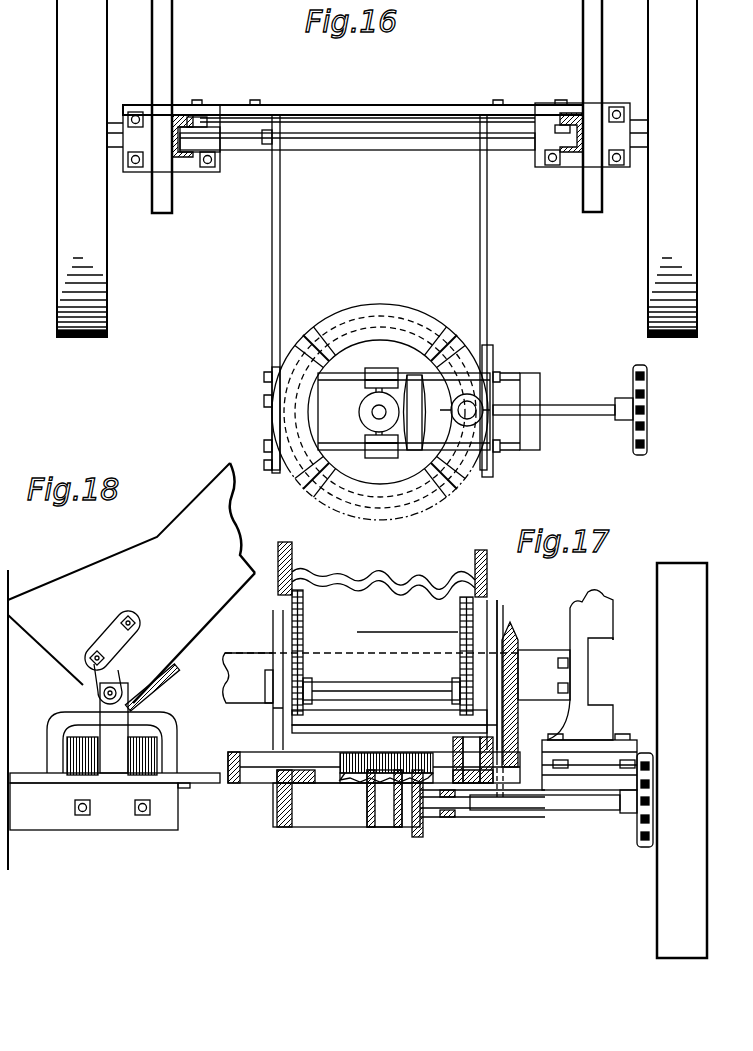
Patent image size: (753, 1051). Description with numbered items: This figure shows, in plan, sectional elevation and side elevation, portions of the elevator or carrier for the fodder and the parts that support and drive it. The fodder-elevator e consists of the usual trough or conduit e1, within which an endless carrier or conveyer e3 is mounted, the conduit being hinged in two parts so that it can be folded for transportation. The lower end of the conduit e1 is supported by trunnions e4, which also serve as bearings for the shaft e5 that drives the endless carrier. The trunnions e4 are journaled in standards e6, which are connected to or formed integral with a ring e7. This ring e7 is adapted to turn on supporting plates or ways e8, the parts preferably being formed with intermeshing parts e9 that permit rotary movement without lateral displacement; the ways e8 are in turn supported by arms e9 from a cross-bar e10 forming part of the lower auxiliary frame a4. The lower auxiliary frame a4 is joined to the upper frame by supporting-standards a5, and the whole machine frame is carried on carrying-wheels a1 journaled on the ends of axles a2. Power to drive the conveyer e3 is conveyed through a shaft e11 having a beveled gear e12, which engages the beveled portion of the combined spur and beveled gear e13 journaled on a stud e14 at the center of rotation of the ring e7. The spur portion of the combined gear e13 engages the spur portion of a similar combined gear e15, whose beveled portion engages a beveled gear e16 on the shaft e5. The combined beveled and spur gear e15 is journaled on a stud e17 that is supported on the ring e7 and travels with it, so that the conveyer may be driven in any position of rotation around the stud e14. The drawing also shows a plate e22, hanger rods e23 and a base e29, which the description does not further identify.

In FIG. 16, the carrying-wheel a1 is at (377, 168).
In FIG. 17, the carrying-wheel a1 is at (682, 760).
In FIG. 16, the axle a2 is at (369, 143).
In FIG. 17, the axle a2 is at (243, 752).
In FIG. 16, the lower auxiliary frame a4 is at (173, 47).
In FIG. 17, the lower auxiliary frame a4 is at (598, 662).
In FIG. 16, the supporting-standard a5 is at (178, 115).
In FIG. 17, the supporting-standard a5 is at (592, 616).
In FIG. 18, the fodder-elevator e is at (163, 558).
In FIG. 17, the fodder-elevator e is at (382, 570).
In FIG. 18, the trough or conduit e1 is at (232, 474).
In FIG. 18, the conveyer e3 is at (168, 675).
In FIG. 17, the conveyer e3 is at (304, 633).
In FIG. 18, the trunnion e4 is at (113, 680).
In FIG. 17, the trunnion e4 is at (500, 618).
In FIG. 18, the shaft e5 is at (104, 693).
In FIG. 17, the shaft e5 is at (368, 692).
In FIG. 16, the standard e6 is at (512, 355).
In FIG. 18, the standard e6 is at (112, 728).
In FIG. 17, the standard e6 is at (490, 724).
In FIG. 16, the ring e7 is at (380, 412).
In FIG. 18, the ring e7 is at (197, 773).
In FIG. 17, the ring e7 is at (324, 772).
In FIG. 16, the supporting plate or way e8 is at (432, 470).
In FIG. 18, the supporting plate or way e8 is at (187, 788).
In FIG. 17, the supporting plate or way e8 is at (297, 783).
In FIG. 17, the intermeshing parts and arms e9 is at (480, 838).
In FIG. 16, the cross-bar e10 is at (433, 112).
In FIG. 17, the cross-bar e10 is at (544, 675).
In FIG. 16, the shaft e11 is at (581, 412).
In FIG. 17, the shaft e11 is at (572, 803).
In FIG. 16, the beveled gear e12 is at (415, 452).
In FIG. 18, the combined spur and beveled gear e13 is at (67, 765).
In FIG. 17, the combined spur and beveled gear e13 is at (365, 775).
In FIG. 17, the stud e14 is at (386, 816).
In FIG. 18, the combined beveled and spur gear e15 is at (77, 747).
In FIG. 17, the combined beveled and spur gear e15 is at (433, 758).
In FIG. 17, the beveled gear e16 is at (516, 640).
In FIG. 16, the stud e17 is at (494, 456).
In FIG. 17, the stud e17 is at (490, 760).
In FIG. 17, the plate e22 is at (416, 832).
In FIG. 16, the hanger rod e23 is at (280, 245).
In FIG. 18, the base box e29 is at (27, 817).
In FIG. 17, the base box e29 is at (489, 830).